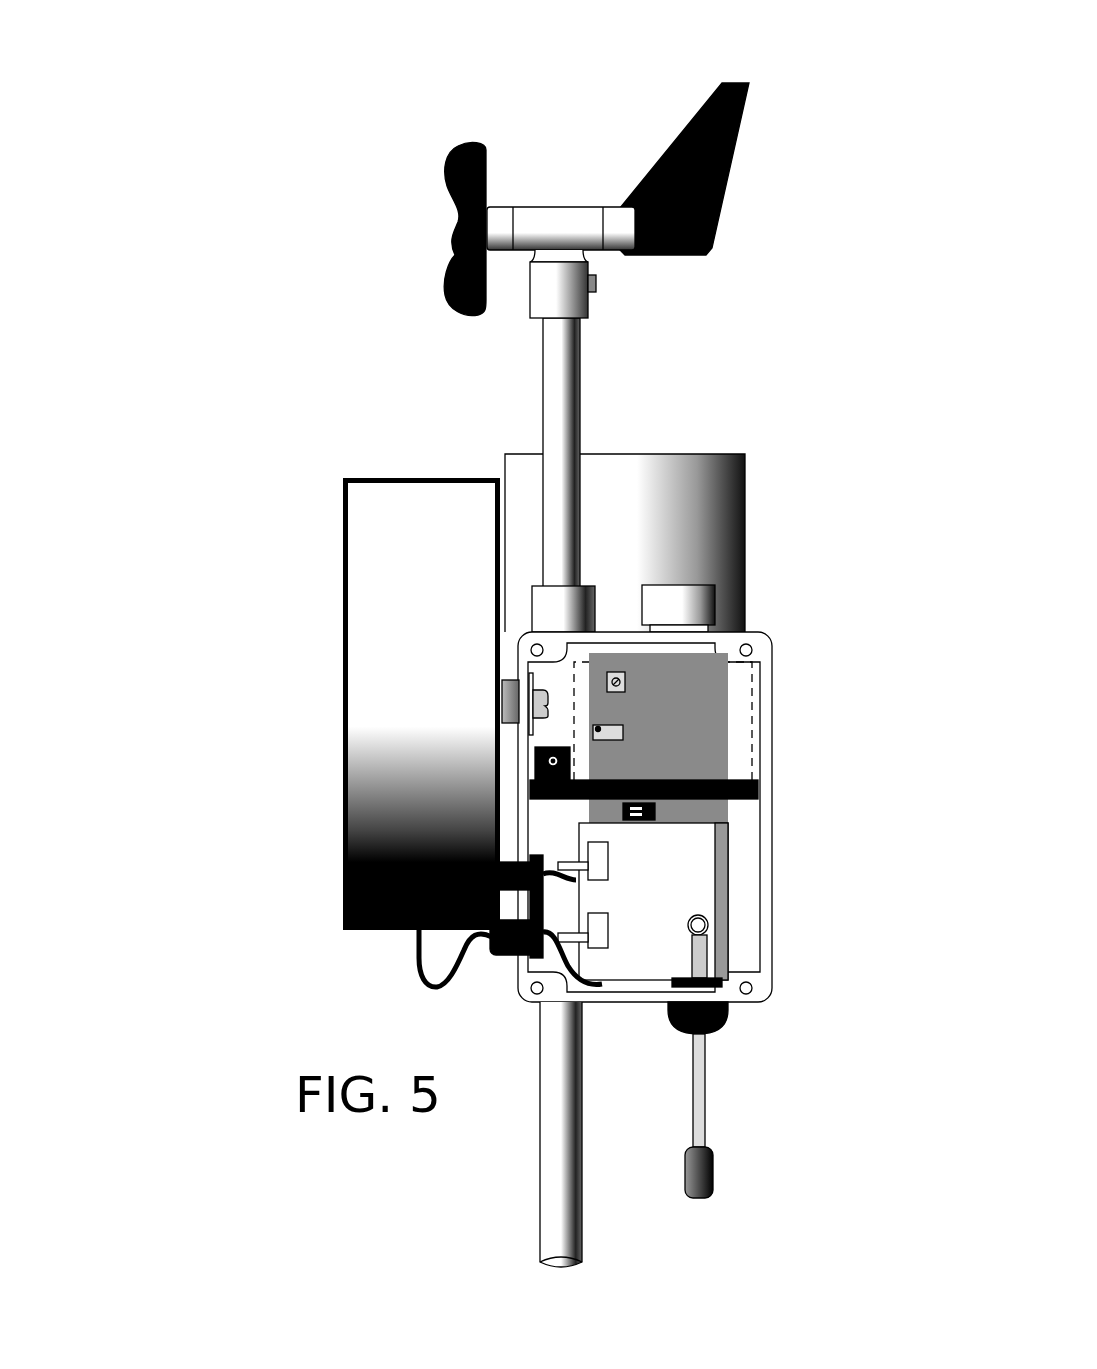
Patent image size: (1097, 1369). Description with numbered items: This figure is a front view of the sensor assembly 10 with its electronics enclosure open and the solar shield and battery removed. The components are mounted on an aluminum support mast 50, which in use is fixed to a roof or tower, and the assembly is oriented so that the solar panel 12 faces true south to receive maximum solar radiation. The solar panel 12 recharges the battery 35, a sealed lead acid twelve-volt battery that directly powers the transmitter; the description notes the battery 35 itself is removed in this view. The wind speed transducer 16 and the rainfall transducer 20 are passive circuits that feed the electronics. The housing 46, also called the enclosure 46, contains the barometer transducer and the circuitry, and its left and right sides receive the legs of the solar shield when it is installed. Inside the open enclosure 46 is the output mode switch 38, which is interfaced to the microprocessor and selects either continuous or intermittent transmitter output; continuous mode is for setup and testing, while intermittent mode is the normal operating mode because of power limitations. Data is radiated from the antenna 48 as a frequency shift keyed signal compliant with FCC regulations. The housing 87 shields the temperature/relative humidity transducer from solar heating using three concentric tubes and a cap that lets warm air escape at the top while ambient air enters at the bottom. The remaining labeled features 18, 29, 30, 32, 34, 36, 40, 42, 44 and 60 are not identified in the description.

The sensor assembly 10 is at (216, 645).
The solar panel 12 is at (390, 557).
The wind speed transducer 16 is at (557, 208).
The shaft 18 is at (575, 395).
The rainfall transducer 20 is at (687, 493).
The sensor 29 is at (623, 678).
The connector 30 is at (552, 702).
The circuit board 32 is at (700, 685).
The electronic component 34 is at (617, 733).
The battery 35 is at (753, 690).
The bus bar 36 is at (758, 793).
The output mode switch 38 is at (655, 812).
The control panel 40 is at (657, 850).
The power switch 42 is at (610, 860).
The channel selector switch 44 is at (608, 930).
The housing 46 is at (773, 1002).
The antenna 48 is at (697, 1083).
The aluminum support mast 50 is at (560, 1172).
The anemometer 60 is at (451, 153).
The housing 87 is at (680, 625).